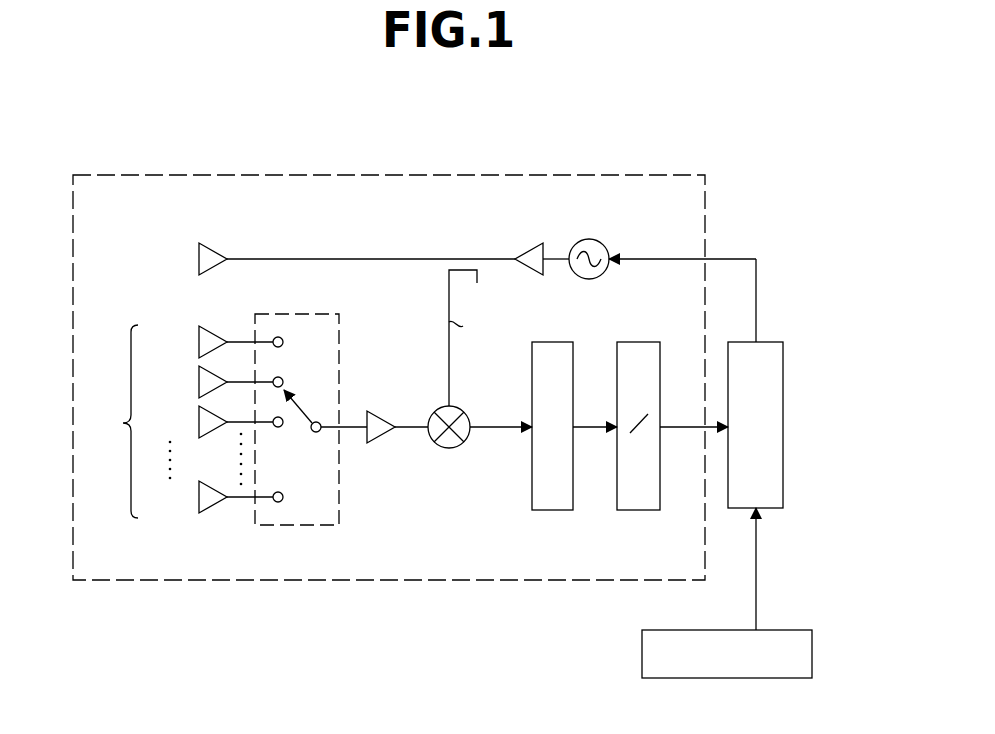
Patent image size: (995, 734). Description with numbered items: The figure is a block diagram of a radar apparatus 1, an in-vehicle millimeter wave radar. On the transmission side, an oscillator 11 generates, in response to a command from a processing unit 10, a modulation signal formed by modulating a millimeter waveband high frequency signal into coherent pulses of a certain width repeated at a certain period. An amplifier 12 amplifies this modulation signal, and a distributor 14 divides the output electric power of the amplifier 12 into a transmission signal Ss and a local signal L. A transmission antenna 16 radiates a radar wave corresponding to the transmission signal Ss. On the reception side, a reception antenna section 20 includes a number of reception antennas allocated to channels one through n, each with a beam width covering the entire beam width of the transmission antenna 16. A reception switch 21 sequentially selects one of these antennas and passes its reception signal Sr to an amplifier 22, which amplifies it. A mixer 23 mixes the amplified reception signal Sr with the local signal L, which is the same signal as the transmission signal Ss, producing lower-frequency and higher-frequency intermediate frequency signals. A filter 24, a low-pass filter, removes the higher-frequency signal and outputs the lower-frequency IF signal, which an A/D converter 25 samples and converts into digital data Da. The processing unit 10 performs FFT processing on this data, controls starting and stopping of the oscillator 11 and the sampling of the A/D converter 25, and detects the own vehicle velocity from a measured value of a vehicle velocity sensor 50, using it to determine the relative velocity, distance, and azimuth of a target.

The radar apparatus 1 is at (280, 135).
The processing unit 10 is at (779, 342).
The oscillator 11 is at (590, 239).
The amplifier 12 is at (533, 243).
The distributor 14 is at (447, 268).
The transmission antenna 16 is at (208, 243).
The reception antenna section 20 is at (182, 421).
The reception switch 21 is at (291, 314).
The amplifier 22 is at (378, 445).
The mixer 23 is at (449, 449).
The filter 24 is at (546, 342).
The A/D converter 25 is at (639, 342).
The vehicle velocity sensor 50 is at (778, 630).